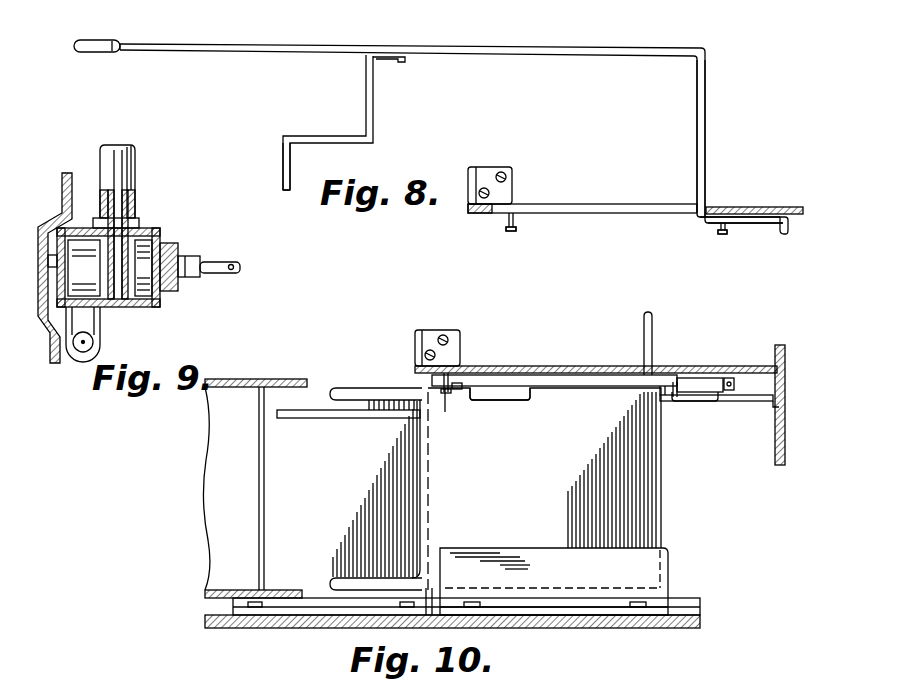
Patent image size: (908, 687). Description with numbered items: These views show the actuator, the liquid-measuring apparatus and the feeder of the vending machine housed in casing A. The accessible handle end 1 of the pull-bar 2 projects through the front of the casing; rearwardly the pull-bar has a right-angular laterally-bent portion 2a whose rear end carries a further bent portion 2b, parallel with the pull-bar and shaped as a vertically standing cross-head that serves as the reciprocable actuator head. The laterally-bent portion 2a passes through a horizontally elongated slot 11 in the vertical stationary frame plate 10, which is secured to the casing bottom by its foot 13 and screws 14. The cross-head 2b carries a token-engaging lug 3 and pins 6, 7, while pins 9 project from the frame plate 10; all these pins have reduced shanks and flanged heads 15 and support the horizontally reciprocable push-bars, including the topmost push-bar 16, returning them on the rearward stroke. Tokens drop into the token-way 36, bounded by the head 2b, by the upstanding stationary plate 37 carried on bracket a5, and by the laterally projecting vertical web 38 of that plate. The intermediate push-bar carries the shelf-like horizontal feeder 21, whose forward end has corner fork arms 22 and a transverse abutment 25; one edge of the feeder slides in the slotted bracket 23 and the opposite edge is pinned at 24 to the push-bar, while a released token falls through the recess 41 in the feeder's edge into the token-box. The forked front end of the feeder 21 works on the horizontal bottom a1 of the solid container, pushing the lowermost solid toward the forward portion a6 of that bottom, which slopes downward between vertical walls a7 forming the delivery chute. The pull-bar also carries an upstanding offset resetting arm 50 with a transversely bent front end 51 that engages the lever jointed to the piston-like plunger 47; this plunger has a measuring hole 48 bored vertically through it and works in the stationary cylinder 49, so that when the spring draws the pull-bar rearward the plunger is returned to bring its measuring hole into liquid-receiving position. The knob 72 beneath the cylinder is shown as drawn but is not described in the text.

In FIG. 8, the handle end 1 is at (102, 41).
In FIG. 8, the pull-bar 2 is at (455, 46).
In FIG. 8, the laterally-bent portion 2a is at (706, 140).
In FIG. 10, the laterally-bent portion 2a is at (653, 341).
In FIG. 8, the cross-head 2b is at (766, 226).
In FIG. 10, the cross-head 2b is at (705, 378).
In FIG. 8, the token-engaging lug 3 is at (789, 231).
In FIG. 10, the token-engaging lug 3 is at (735, 384).
In FIG. 8, the pin 6 is at (718, 227).
In FIG. 10, the pin 6 is at (679, 393).
In FIG. 9, the pin 7 is at (136, 178).
In FIG. 9, the knob 72 is at (80, 353).
In FIG. 8, the pin 9 is at (508, 228).
In FIG. 10, the pin 9 is at (430, 378).
In FIG. 8, the frame plate 10 is at (480, 214).
In FIG. 10, the frame plate 10 is at (504, 366).
In FIG. 8, the slot 11 is at (580, 204).
In FIG. 8, the foot 13 is at (497, 162).
In FIG. 10, the foot 13 is at (436, 331).
In FIG. 8, the screws 14 is at (505, 177).
In FIG. 10, the screws 14 is at (450, 340).
In FIG. 8, the flanged head 15 is at (516, 232).
In FIG. 10, the flanged head 15 is at (463, 380).
In FIG. 10, the topmost push-bar 16 is at (532, 378).
In FIG. 10, the feeder 21 is at (543, 501).
In FIG. 10, the fork arms 22 is at (365, 388).
In FIG. 10, the bracket 23 is at (554, 581).
In FIG. 10, the pins 24 is at (445, 395).
In FIG. 10, the transverse abutment 25 is at (418, 458).
In FIG. 10, the token-way 36 is at (712, 394).
In FIG. 10, the stationary plate 37 is at (688, 396).
In FIG. 10, the web 38 is at (736, 379).
In FIG. 10, the recess 41 is at (518, 401).
In FIG. 9, the plunger 47 is at (178, 259).
In FIG. 9, the measuring hole 48 is at (119, 306).
In FIG. 9, the cylinder 49 is at (160, 301).
In FIG. 8, the resetting arm 50 is at (375, 113).
In FIG. 8, the bent front end 51 is at (283, 175).
In FIG. 9, the casing A is at (62, 190).
In FIG. 10, the casing A is at (273, 628).
In FIG. 10, the bottom a1 is at (348, 456).
In FIG. 10, the bracket a5 is at (752, 402).
In FIG. 10, the forward portion of bottom a6 is at (451, 501).
In FIG. 10, the vertical walls a7 is at (243, 389).